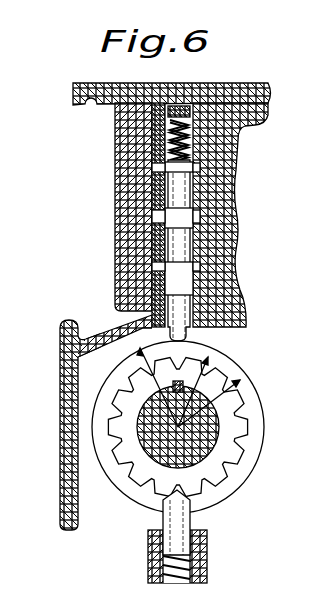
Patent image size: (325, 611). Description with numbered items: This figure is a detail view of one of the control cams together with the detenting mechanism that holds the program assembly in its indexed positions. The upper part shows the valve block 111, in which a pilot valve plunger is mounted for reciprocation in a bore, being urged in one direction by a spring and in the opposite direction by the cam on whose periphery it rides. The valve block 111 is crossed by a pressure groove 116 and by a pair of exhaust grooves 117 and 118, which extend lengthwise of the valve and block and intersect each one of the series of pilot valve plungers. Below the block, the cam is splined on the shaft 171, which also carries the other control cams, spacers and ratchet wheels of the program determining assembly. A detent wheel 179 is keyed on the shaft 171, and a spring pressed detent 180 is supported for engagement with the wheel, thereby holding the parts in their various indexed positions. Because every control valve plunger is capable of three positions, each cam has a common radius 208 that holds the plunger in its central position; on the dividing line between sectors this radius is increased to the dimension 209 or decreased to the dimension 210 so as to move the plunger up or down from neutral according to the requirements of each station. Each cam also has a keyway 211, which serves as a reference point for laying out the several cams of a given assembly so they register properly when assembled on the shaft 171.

The valve block 111 is at (236, 240).
The pressure groove 116 is at (152, 218).
The exhaust groove 117 is at (152, 168).
The exhaust groove 118 is at (152, 268).
The shaft 171 is at (200, 437).
The detent wheel 179 is at (213, 480).
The spring pressed detent 180 is at (177, 517).
The common radius 208 is at (240, 380).
The increased radius dimension 209 is at (140, 364).
The decreased radius dimension 210 is at (178, 427).
The keyway 211 is at (173, 388).